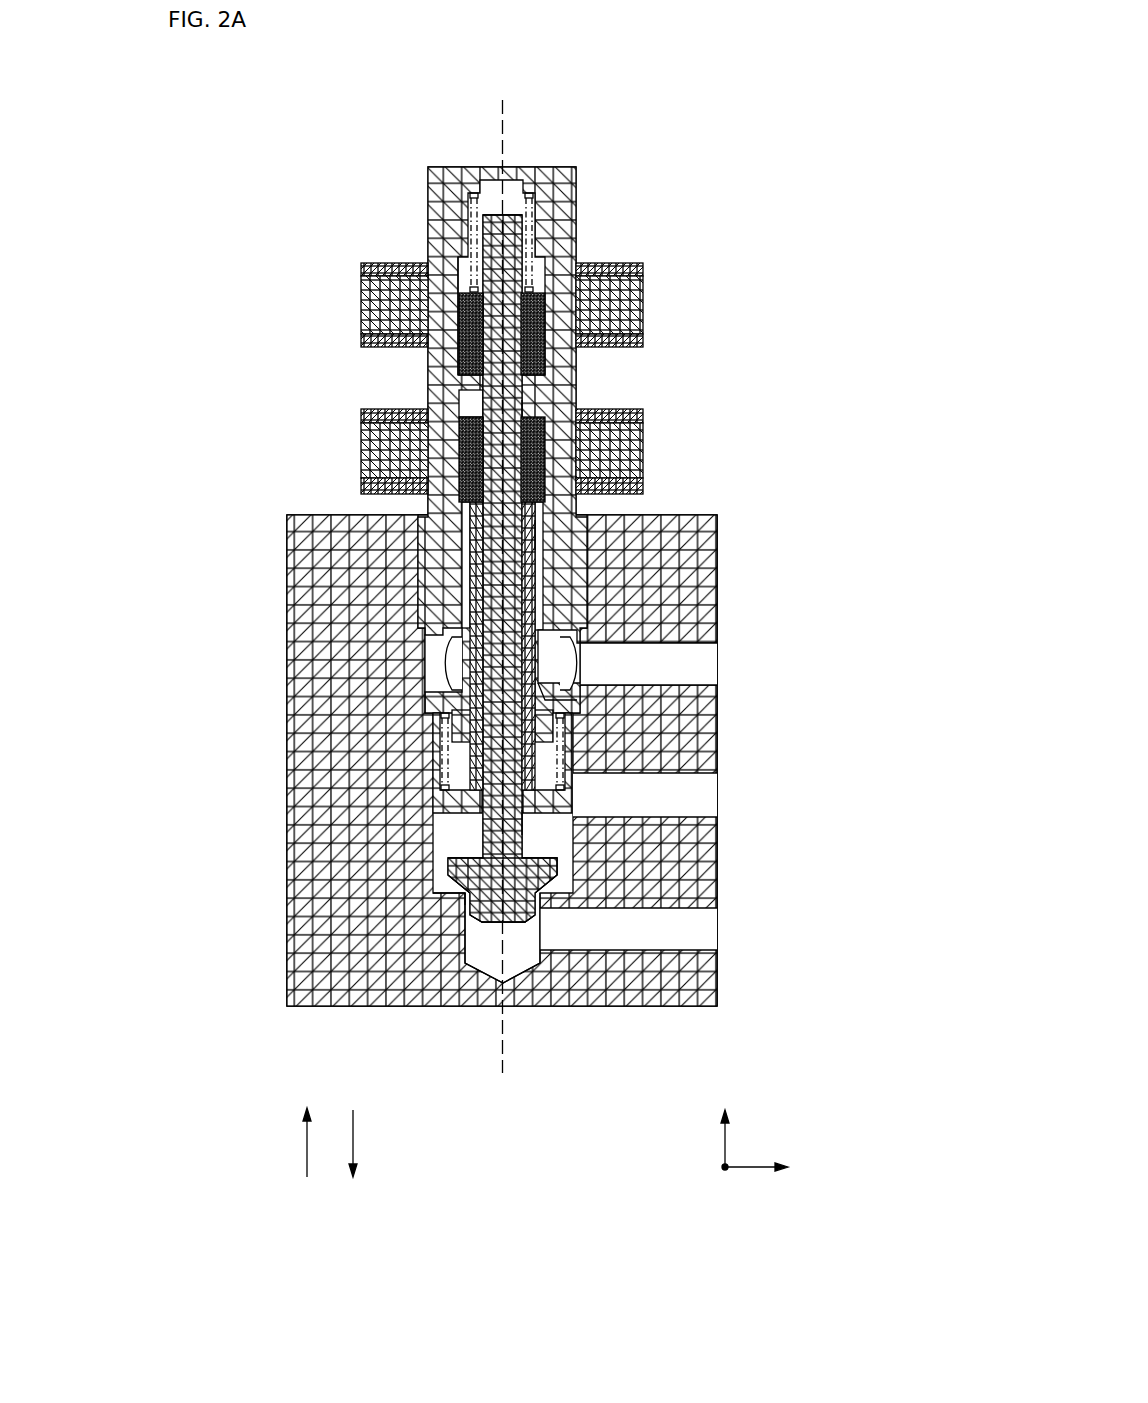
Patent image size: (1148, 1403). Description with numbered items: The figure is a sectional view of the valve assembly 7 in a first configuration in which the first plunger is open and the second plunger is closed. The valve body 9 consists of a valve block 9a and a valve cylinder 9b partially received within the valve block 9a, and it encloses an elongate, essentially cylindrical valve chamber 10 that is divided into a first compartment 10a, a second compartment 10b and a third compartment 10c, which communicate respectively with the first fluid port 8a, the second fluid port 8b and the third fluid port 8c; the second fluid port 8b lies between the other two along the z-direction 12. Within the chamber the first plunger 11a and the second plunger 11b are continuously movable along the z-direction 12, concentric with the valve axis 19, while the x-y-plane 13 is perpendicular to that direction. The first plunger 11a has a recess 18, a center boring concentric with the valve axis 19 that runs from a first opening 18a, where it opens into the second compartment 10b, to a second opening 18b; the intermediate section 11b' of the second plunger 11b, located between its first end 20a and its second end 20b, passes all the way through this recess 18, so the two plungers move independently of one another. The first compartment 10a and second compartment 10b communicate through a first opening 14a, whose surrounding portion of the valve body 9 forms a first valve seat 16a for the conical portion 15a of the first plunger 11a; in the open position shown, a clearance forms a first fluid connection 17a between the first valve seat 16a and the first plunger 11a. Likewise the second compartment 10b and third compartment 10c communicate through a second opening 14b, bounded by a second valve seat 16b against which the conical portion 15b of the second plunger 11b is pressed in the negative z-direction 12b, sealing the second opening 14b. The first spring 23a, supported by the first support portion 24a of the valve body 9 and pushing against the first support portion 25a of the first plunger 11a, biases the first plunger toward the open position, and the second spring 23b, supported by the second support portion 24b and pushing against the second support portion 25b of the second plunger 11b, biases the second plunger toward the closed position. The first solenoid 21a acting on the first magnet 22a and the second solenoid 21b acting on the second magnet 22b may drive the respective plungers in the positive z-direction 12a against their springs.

The valve assembly 7 is at (708, 147).
The first fluid port 8a is at (717, 677).
The second fluid port 8b is at (717, 809).
The third fluid port 8c is at (717, 942).
The valve body 9 is at (502, 586).
The valve block 9a is at (287, 633).
The valve cylinder 9b is at (428, 181).
The valve chamber 10 is at (502, 568).
The first compartment 10a is at (540, 590).
The second compartment 10b is at (545, 752).
The third compartment 10c is at (526, 953).
The first plunger 11a is at (533, 537).
The second plunger 11b is at (417, 331).
The intermediate section 11b' is at (411, 459).
The z-direction 12 is at (725, 1145).
The positive z-direction 12a is at (307, 1153).
The negative z-direction 12b is at (353, 1135).
The x-y-plane 13 is at (748, 1170).
The first opening 14a is at (465, 692).
The second opening 14b is at (465, 925).
The conical portion 15a is at (450, 730).
The conical portion 15b is at (550, 880).
The first valve seat 16a is at (555, 706).
The second valve seat 16b is at (463, 908).
The first fluid connection 17a is at (562, 673).
The recess 18 is at (515, 490).
The first opening 18a is at (512, 822).
The second opening 18b is at (513, 412).
The valve axis 19 is at (503, 112).
The first end 20a is at (478, 935).
The second end 20b is at (513, 206).
The first solenoid 21a is at (643, 450).
The second solenoid 21b is at (643, 297).
The first magnet 22a is at (470, 458).
The second magnet 22b is at (533, 321).
The first spring 23a is at (443, 793).
The second spring 23b is at (473, 287).
The first support portion 24a is at (457, 728).
The second support portion 24b is at (473, 195).
The first support portion 25a is at (563, 800).
The second support portion 25b is at (541, 287).